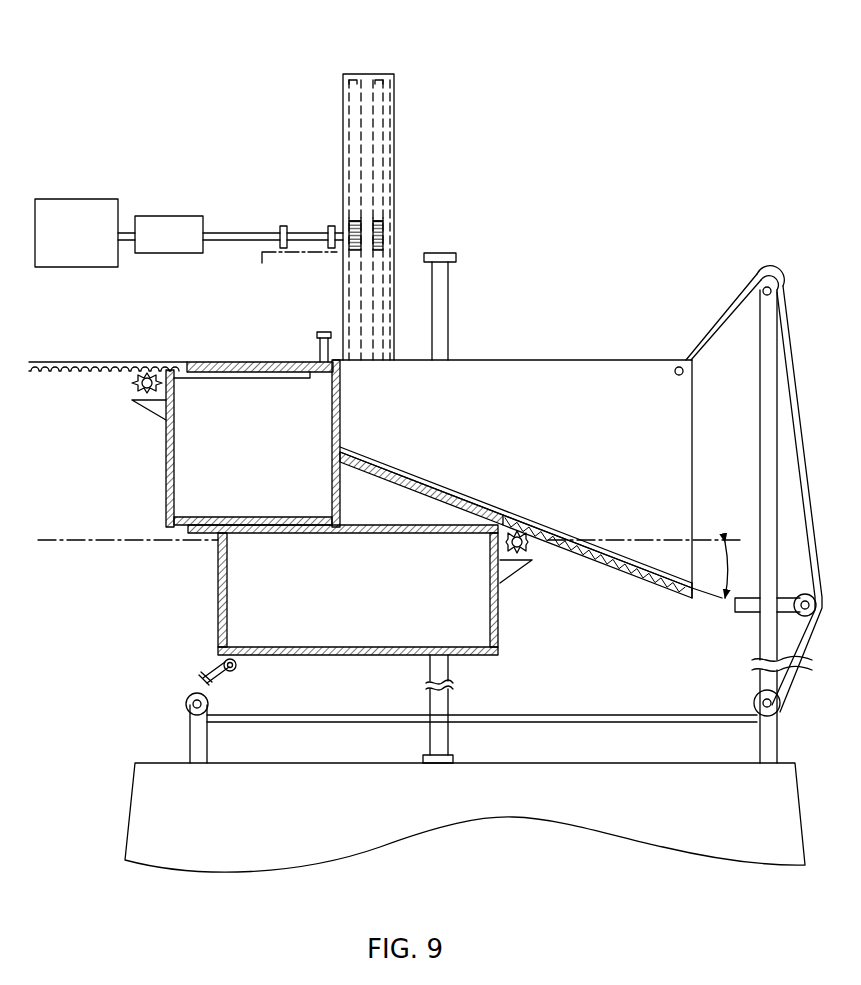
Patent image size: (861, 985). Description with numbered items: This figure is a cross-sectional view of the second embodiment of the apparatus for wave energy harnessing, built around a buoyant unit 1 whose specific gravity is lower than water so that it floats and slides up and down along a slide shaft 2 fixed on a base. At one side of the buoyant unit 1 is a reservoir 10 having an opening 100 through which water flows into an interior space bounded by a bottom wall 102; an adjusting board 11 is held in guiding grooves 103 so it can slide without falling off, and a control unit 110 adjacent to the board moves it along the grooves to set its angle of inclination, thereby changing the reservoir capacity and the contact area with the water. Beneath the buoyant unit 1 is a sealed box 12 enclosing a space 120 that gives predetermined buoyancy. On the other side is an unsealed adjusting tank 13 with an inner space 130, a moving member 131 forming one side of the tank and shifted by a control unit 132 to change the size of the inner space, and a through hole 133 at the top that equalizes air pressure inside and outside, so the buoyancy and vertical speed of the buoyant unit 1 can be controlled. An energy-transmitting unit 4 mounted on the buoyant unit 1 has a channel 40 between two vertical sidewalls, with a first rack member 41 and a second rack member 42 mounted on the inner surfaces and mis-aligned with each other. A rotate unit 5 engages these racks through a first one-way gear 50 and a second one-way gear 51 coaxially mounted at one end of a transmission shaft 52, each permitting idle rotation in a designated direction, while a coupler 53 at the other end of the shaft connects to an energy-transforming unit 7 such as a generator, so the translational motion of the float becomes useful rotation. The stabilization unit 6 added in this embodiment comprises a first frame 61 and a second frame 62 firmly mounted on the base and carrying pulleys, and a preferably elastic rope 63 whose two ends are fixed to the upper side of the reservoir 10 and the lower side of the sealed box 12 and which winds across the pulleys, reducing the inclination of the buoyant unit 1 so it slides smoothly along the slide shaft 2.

The buoyant unit 1 is at (547, 338).
The slide shaft 2 is at (448, 663).
The energy-transmitting unit 4 is at (380, 181).
The channel 40 is at (367, 78).
The first rack member 41 is at (383, 78).
The second rack member 42 is at (352, 78).
The rotate unit 5 is at (250, 151).
The first one-way gear 50 is at (381, 221).
The second one-way gear 51 is at (358, 220).
The transmission shaft 52 is at (237, 235).
The coupler 53 is at (167, 227).
The stabilization unit 6 is at (743, 465).
The first frame 61 is at (765, 400).
The second frame 62 is at (195, 740).
The rope 63 is at (800, 455).
The energy-transforming unit 7 is at (83, 217).
The reservoir 10 is at (605, 413).
The opening 100 is at (665, 360).
The bottom wall 102 is at (498, 620).
The guiding groove 103 is at (490, 620).
The adjusting board 11 is at (643, 568).
The control unit 110 is at (530, 548).
The sealed box 12 is at (218, 633).
The space 120 is at (325, 630).
The adjusting tank 13 is at (175, 429).
The inner space 130 is at (70, 383).
The moving member 131 is at (167, 472).
The control unit 132 is at (135, 383).
The through hole 133 is at (318, 347).